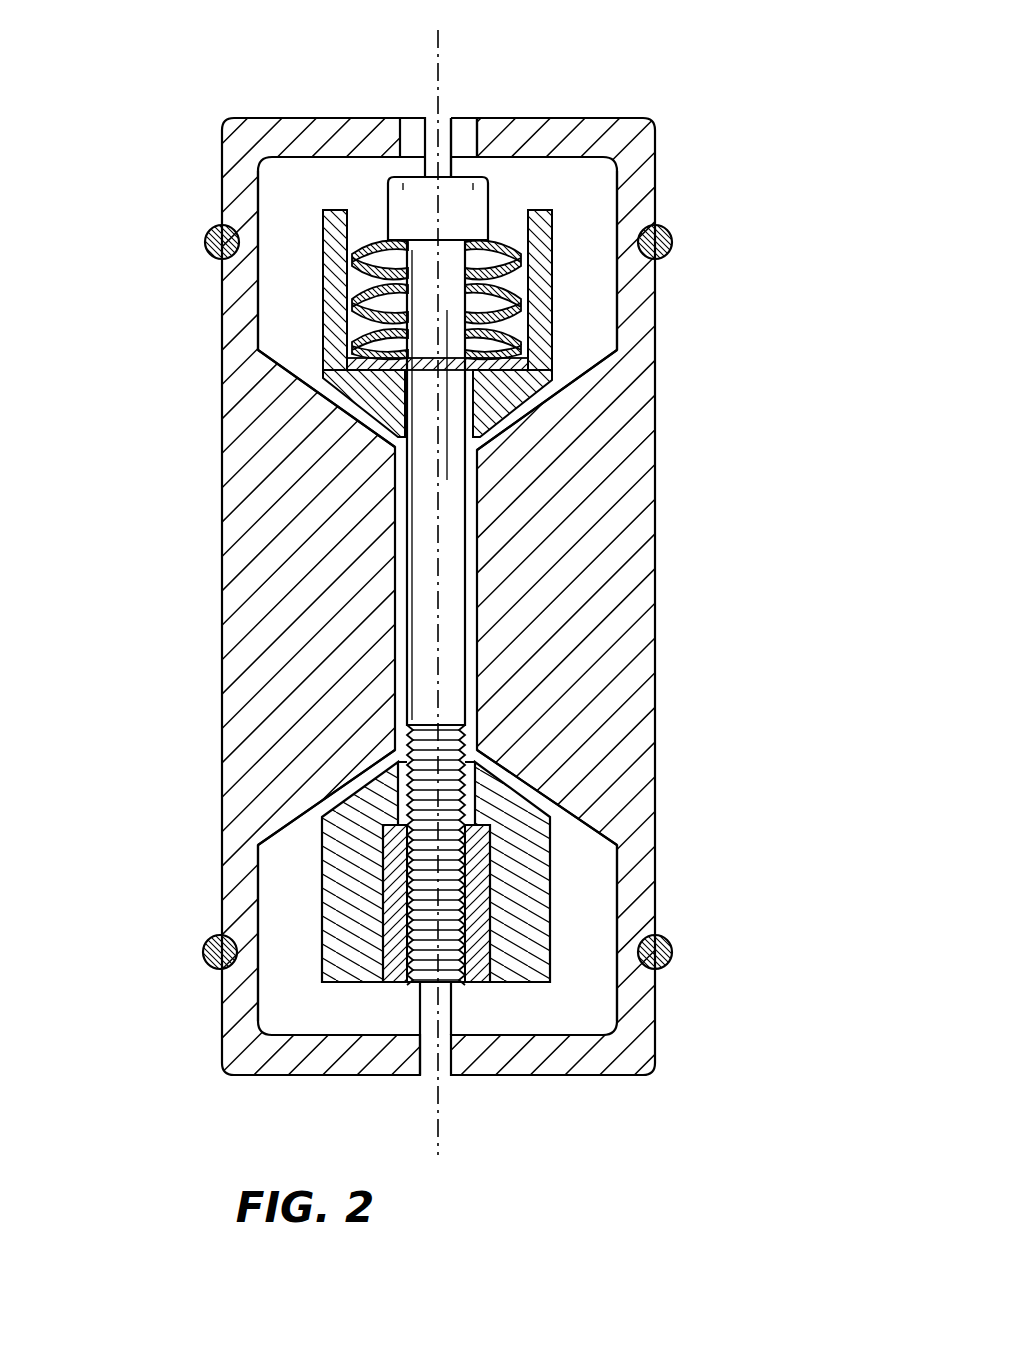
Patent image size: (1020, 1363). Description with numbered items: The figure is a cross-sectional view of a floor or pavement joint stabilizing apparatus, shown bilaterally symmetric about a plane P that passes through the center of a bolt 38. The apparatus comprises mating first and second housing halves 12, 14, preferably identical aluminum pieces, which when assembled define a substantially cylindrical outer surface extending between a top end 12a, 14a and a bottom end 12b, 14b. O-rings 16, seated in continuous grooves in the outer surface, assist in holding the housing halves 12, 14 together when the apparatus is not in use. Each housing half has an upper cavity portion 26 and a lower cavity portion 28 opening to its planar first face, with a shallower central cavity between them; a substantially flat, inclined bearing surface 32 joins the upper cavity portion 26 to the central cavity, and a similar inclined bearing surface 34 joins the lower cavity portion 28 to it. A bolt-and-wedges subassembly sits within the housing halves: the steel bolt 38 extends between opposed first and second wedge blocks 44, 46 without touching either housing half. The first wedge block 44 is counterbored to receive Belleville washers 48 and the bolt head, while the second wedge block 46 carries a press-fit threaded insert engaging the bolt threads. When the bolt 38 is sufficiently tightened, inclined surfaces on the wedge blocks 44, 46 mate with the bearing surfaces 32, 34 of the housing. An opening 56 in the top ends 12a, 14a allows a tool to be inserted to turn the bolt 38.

The first housing half 12 is at (640, 601).
The top end of first housing half 12a is at (568, 118).
The bottom end of first housing half 12b is at (582, 1078).
The second housing half 14 is at (230, 568).
The top end of second housing half 14a is at (287, 118).
The bottom end of second housing half 14b is at (280, 1078).
The O-rings 16 is at (205, 235).
The upper cavity portion 26 is at (437, 260).
The lower cavity portion 28 is at (437, 933).
The inclined bearing surface 32 is at (287, 340).
The inclined bearing surface 34 is at (290, 840).
The bolt 38 is at (425, 658).
The first wedge block 44 is at (508, 388).
The second wedge block 46 is at (558, 800).
The Belleville washers 48 is at (507, 233).
The opening 56 is at (463, 128).
The plane of symmetry P is at (438, 50).